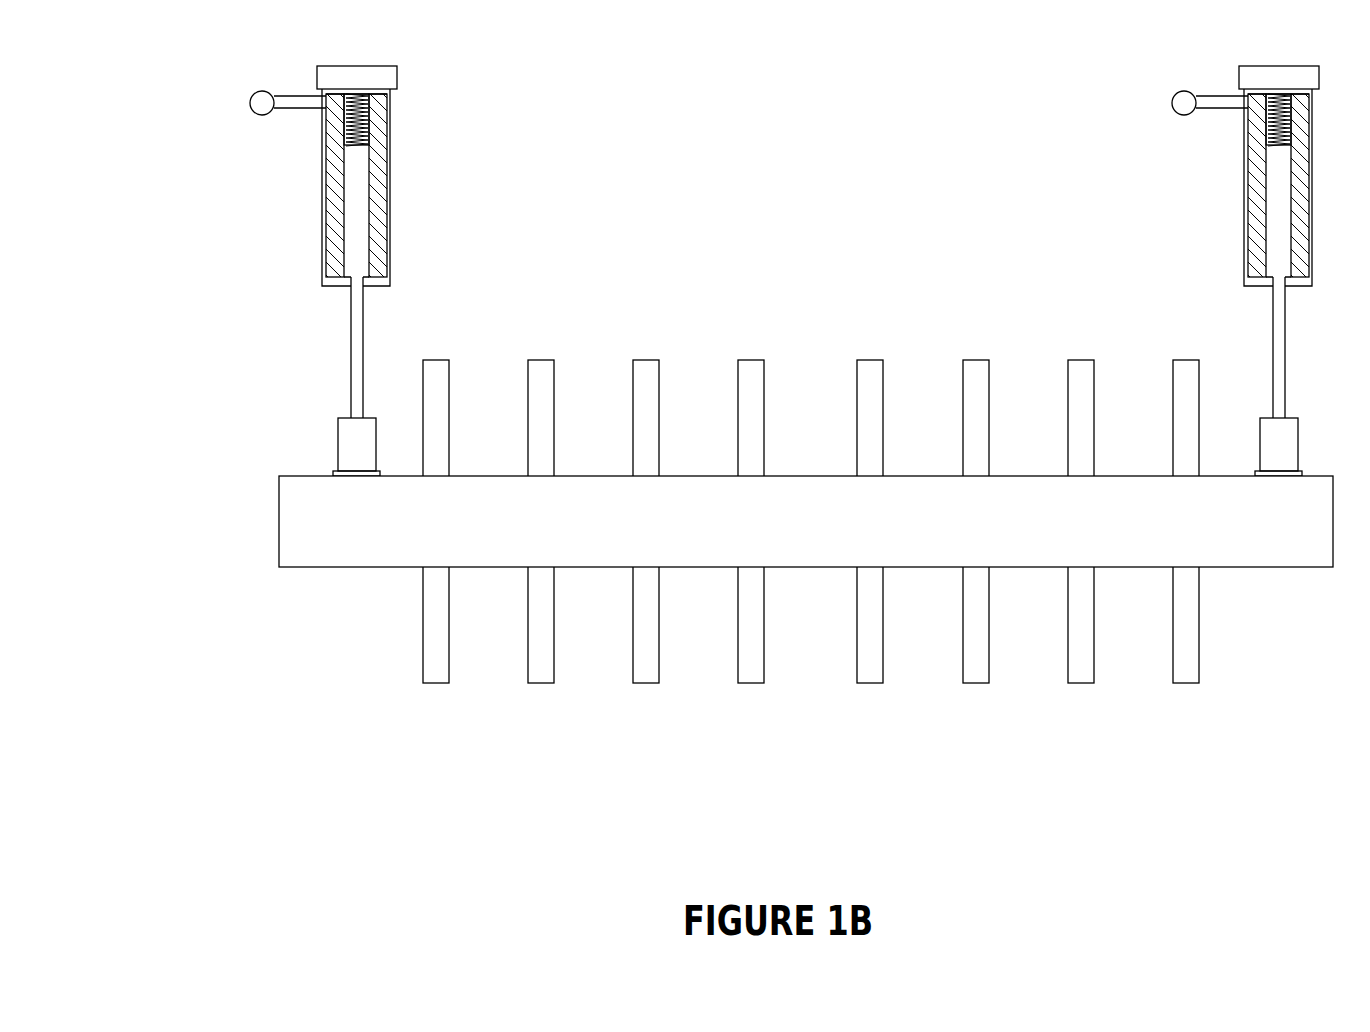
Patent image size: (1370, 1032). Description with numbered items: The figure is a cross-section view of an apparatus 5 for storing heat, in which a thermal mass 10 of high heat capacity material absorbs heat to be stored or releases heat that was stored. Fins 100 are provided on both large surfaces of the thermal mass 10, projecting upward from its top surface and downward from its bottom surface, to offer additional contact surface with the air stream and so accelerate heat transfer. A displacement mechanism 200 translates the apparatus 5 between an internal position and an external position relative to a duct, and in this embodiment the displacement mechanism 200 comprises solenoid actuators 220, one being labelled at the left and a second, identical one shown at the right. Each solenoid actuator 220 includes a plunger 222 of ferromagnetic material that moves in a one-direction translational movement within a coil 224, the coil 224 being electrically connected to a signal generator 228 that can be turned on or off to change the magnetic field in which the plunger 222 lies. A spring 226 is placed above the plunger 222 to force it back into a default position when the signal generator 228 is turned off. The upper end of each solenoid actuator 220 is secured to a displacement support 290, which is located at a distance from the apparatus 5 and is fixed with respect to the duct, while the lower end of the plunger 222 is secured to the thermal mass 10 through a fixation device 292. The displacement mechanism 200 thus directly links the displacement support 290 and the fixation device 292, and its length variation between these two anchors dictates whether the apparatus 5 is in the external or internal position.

The apparatus 5 is at (751, 376).
The thermal mass 10 is at (370, 553).
The fins 100 is at (1190, 368).
The displacement mechanism 200 is at (346, 244).
The solenoid actuator 220 is at (395, 170).
The plunger 222 is at (358, 352).
The coil 224 is at (375, 265).
The spring 226 is at (343, 123).
The signal generator 228 is at (248, 103).
The displacement support 290 is at (392, 83).
The fixation device 292 is at (335, 473).